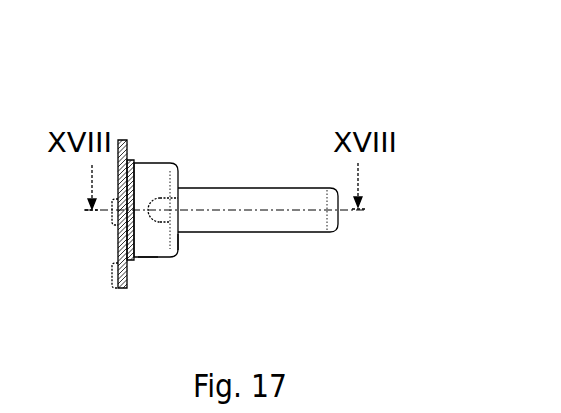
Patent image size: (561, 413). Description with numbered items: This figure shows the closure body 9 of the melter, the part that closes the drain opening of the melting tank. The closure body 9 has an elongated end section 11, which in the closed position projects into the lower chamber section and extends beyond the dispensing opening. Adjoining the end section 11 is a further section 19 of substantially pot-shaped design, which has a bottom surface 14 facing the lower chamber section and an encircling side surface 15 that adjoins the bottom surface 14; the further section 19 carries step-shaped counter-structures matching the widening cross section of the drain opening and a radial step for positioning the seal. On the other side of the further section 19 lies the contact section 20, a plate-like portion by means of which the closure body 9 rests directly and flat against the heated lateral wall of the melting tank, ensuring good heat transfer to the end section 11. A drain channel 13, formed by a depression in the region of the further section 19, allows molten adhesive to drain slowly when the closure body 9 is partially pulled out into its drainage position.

The closure body 9 is at (382, 273).
The end section 11 is at (283, 200).
The drain channel 13 is at (166, 212).
The bottom surface 14 is at (180, 242).
The encircling side surface 15 is at (147, 258).
The further section 19 is at (158, 177).
The contact section 20 is at (123, 140).